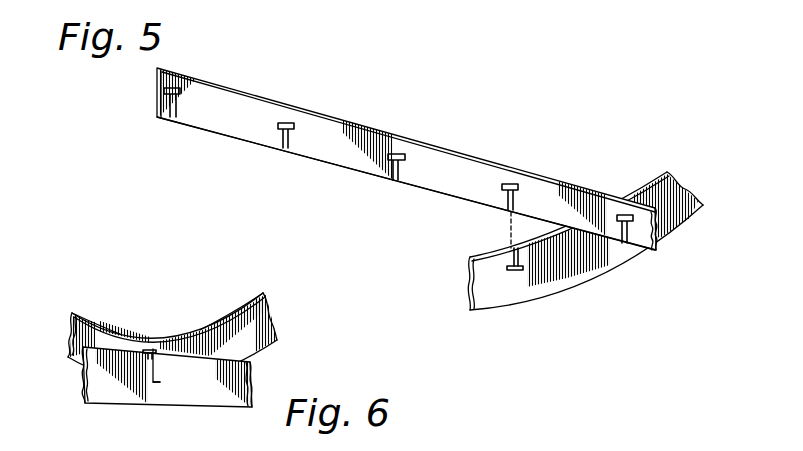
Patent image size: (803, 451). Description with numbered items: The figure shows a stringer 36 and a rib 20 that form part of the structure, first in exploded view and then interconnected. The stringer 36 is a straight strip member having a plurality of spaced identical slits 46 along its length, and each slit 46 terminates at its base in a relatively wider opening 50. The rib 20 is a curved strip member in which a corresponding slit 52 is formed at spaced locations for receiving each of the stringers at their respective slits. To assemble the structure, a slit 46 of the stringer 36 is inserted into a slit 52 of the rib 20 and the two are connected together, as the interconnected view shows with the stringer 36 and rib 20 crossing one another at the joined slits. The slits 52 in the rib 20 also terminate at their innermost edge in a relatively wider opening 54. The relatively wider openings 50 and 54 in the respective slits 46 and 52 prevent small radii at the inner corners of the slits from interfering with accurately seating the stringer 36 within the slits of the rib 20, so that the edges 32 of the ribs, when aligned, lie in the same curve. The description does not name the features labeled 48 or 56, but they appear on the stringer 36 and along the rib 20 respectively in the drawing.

In FIG. 5, the rib 20 is at (488, 306).
In FIG. 6, the rib 20 is at (261, 321).
In FIG. 6, the edges of the ribs 32 is at (243, 295).
In FIG. 5, the stringer 36 is at (462, 170).
In FIG. 6, the stringer 36 is at (253, 366).
In FIG. 5, the slits 46 is at (393, 157).
In FIG. 6, the slits 46 is at (150, 379).
In FIG. 5, the strip face 48 is at (325, 163).
In FIG. 5, the wider opening 50 is at (286, 119).
In FIG. 6, the wider opening 50 is at (158, 358).
In FIG. 5, the slit 52 is at (511, 267).
In FIG. 6, the slit 52 is at (162, 335).
In FIG. 5, the wider opening 54 is at (510, 272).
In FIG. 6, the wider opening 54 is at (157, 357).
In FIG. 6, the edge of curved strip 56 is at (103, 305).